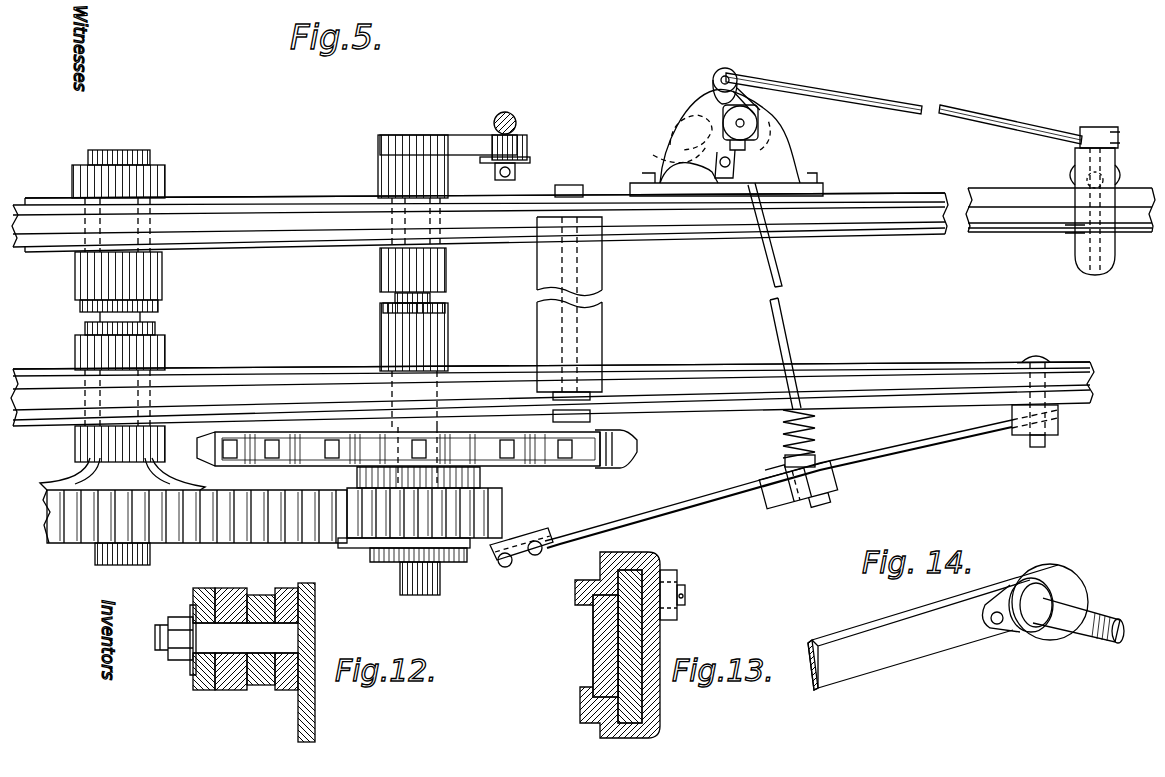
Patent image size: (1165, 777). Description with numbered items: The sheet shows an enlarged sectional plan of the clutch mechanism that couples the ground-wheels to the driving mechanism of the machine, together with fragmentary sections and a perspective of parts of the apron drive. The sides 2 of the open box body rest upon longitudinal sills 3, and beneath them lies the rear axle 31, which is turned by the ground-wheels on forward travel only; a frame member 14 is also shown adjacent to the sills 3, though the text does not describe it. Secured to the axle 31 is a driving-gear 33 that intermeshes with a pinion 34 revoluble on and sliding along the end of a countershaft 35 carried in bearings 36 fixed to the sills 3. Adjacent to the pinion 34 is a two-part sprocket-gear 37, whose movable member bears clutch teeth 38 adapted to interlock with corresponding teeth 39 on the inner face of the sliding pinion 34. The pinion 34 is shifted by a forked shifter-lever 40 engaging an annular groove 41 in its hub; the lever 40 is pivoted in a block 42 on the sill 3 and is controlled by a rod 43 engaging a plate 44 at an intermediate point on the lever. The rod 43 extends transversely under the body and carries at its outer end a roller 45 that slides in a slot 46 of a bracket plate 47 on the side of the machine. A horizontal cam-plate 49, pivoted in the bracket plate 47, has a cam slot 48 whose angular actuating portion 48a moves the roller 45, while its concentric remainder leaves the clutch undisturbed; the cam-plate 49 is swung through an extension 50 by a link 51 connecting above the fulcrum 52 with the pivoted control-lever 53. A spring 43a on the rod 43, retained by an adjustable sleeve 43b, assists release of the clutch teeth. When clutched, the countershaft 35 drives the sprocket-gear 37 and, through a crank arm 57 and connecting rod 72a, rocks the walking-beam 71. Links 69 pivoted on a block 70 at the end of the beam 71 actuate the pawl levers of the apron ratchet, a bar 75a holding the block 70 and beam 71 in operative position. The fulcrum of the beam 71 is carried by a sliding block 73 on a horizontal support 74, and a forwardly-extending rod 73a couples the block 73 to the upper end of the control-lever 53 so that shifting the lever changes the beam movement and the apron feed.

In FIG. 5, the sides 2 is at (888, 228).
In FIG. 5, the longitudinal sills 3 is at (903, 195).
In FIG. 5, the hanger bracket 14 is at (597, 352).
In FIG. 5, the rear axle 31 is at (122, 548).
In FIG. 5, the driving-gear 33 is at (203, 530).
In FIG. 5, the pinion 34 is at (362, 520).
In FIG. 5, the countershaft 35 is at (395, 298).
In FIG. 5, the bearings 36 is at (448, 348).
In FIG. 5, the sprocket-gear 37 is at (612, 462).
In FIG. 5, the teeth 38 is at (480, 477).
In FIG. 5, the teeth 39 is at (385, 548).
In FIG. 5, the shifter-lever 40 is at (690, 515).
In FIG. 5, the annular groove 41 is at (470, 555).
In FIG. 5, the block 42 is at (1040, 447).
In FIG. 5, the rod 43 is at (798, 345).
In FIG. 5, the spring 43a is at (780, 446).
In FIG. 5, the sleeve 43b is at (815, 455).
In FIG. 5, the plate 44 is at (828, 488).
In FIG. 5, the roller 45 is at (748, 98).
In FIG. 5, the slot 46 is at (765, 128).
In FIG. 5, the bracket plate 47 is at (745, 166).
In FIG. 5, the cam slot 48 is at (698, 128).
In FIG. 5, the actuating portion 48a is at (780, 115).
In FIG. 5, the cam-plate 49 is at (672, 168).
In FIG. 5, the extension 50 is at (726, 66).
In FIG. 5, the link 51 is at (888, 112).
In FIG. 5, the fulcrum 52 is at (1093, 128).
In FIG. 5, the control-lever 53 is at (1090, 190).
In FIG. 5, the crank arm 57 is at (527, 142).
In FIG. 5, the connecting rod 72a is at (508, 112).
In FIG. 12, the links 69 is at (200, 690).
In FIG. 12, the block 70 is at (262, 686).
In FIG. 14, the block 70 is at (1038, 570).
In FIG. 12, the walking-beam 71 is at (287, 690).
In FIG. 13, the walking-beam 71 is at (598, 645).
In FIG. 14, the walking-beam 71 is at (944, 645).
In FIG. 12, the support 74 is at (315, 708).
In FIG. 13, the support 74 is at (645, 697).
In FIG. 12, the bar 75a is at (225, 690).
In FIG. 13, the sliding block 73 is at (655, 562).
In FIG. 13, the rod 73a is at (678, 585).